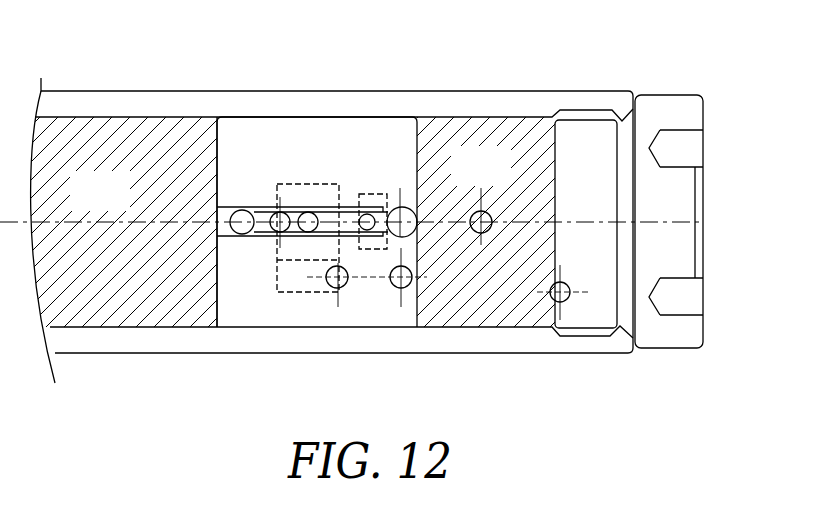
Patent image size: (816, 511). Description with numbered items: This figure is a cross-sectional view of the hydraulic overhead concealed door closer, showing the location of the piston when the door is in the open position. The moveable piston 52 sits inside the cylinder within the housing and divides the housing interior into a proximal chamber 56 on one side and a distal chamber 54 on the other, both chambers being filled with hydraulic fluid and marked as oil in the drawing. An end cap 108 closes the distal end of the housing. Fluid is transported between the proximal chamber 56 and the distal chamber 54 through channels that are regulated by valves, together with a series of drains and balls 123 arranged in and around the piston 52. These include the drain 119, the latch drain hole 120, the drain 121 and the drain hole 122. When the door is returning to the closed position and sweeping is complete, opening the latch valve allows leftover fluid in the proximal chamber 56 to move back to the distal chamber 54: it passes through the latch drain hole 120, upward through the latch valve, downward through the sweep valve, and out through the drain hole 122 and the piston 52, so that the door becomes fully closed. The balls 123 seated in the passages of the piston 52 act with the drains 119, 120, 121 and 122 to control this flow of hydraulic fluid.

The distal chamber 54 is at (90, 135).
The moveable piston 52 is at (388, 127).
The proximal chamber 56 is at (525, 130).
The end cap 108 is at (680, 194).
The drain 119 is at (262, 210).
The latch drain hole 120 is at (552, 300).
The drain 121 is at (471, 214).
The drain hole 122 is at (397, 290).
The balls 123 is at (225, 208).